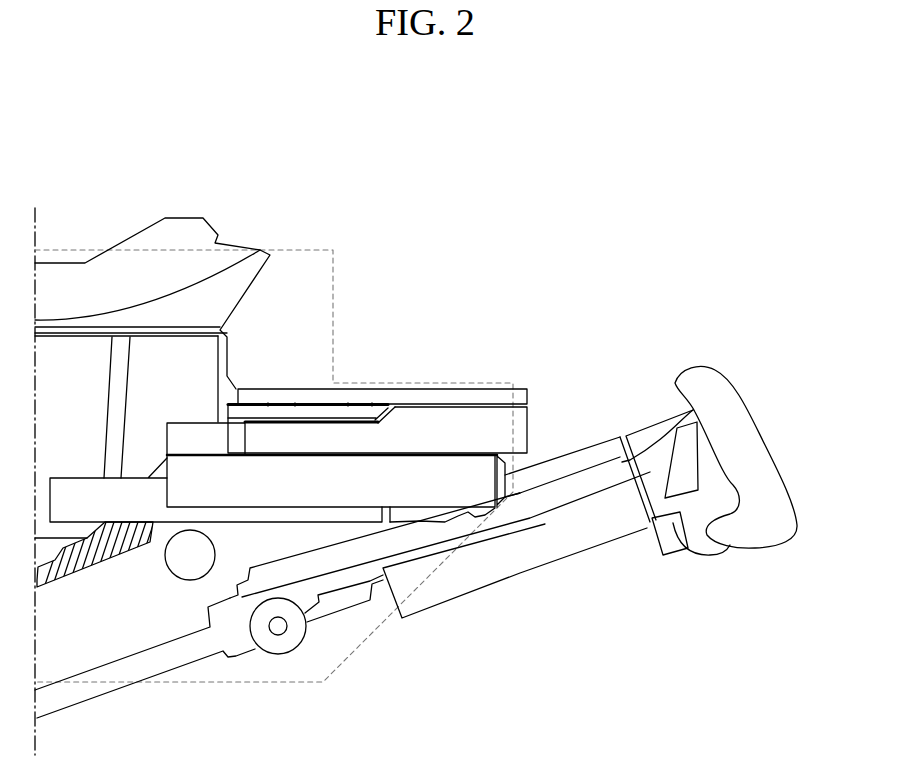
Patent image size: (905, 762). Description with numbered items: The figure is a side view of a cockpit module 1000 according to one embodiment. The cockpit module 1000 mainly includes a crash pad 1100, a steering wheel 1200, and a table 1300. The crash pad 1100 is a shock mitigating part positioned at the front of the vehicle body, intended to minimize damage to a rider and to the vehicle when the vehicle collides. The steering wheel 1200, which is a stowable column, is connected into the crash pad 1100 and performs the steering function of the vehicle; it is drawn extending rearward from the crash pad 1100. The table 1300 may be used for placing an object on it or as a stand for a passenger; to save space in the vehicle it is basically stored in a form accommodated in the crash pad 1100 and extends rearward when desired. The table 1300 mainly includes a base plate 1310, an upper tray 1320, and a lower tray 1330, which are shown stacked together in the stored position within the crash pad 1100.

The cockpit module 1000 is at (457, 130).
The crash pad 1100 is at (293, 288).
The steering wheel 1200 is at (772, 522).
The table 1300 is at (428, 485).
The base plate 1310 is at (432, 486).
The upper tray 1320 is at (528, 391).
The lower tray 1330 is at (518, 435).